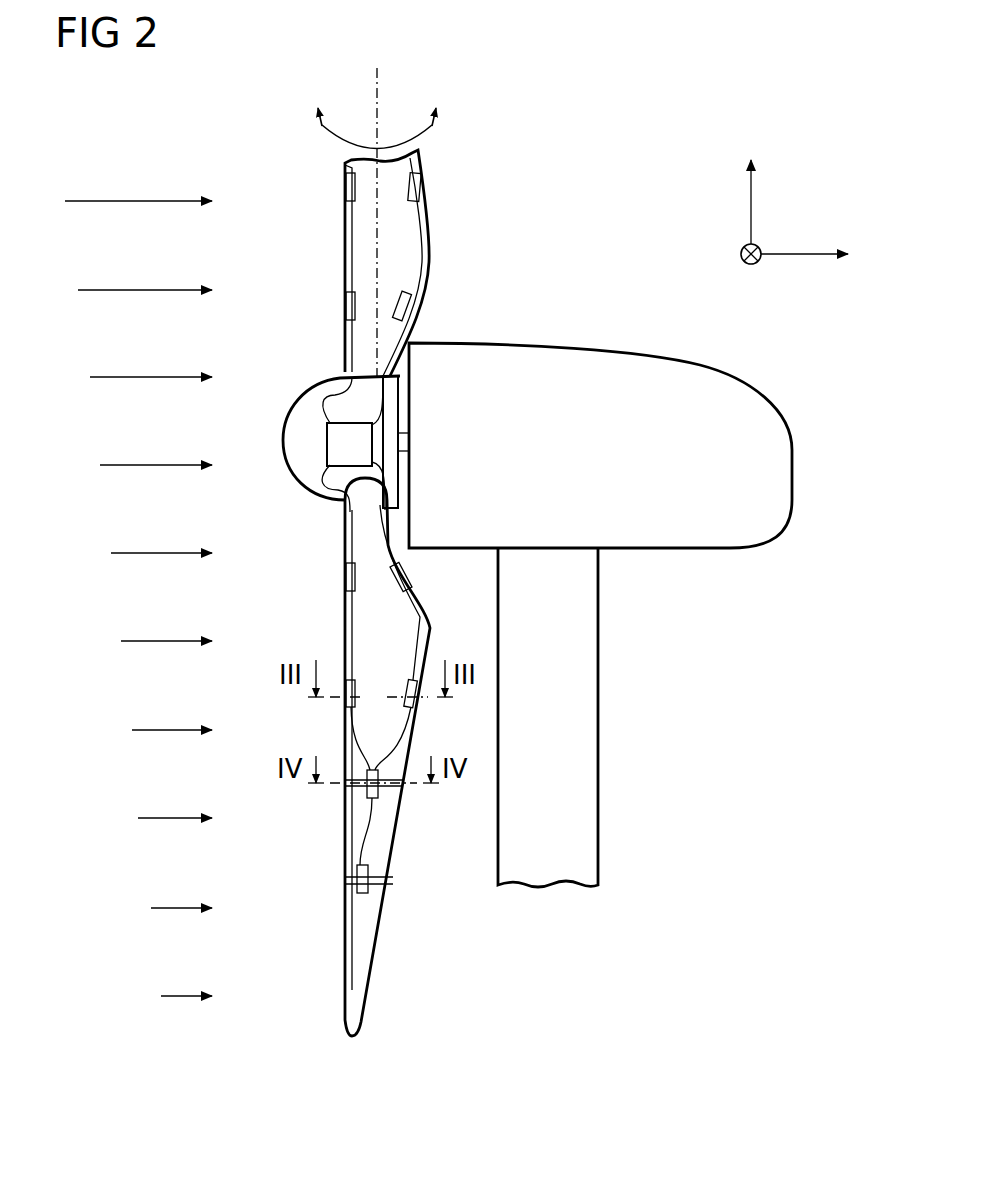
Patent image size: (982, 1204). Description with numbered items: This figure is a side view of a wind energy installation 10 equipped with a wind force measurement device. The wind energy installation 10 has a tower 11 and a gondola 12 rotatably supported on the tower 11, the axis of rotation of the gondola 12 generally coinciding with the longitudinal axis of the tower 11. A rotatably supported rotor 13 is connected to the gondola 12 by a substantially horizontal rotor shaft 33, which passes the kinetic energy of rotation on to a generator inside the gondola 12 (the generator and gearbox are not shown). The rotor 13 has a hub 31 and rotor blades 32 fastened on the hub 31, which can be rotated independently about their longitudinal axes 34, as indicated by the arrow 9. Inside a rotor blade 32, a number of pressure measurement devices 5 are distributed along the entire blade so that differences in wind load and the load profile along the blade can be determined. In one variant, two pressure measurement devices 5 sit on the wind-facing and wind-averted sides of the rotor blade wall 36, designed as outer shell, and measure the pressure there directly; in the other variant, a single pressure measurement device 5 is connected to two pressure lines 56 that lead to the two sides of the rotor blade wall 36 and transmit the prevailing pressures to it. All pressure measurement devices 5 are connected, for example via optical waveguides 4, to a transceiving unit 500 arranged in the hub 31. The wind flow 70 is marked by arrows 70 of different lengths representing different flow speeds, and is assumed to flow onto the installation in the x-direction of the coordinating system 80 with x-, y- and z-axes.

The optical waveguide 4 is at (326, 405).
The pressure measurement device 5 is at (346, 187).
The arrow 9 is at (320, 130).
The wind energy installation 10 is at (600, 598).
The tower 11 is at (590, 826).
The gondola 12 is at (684, 382).
The rotor 13 is at (244, 497).
The hub 31 is at (396, 392).
The rotor blade 32 is at (430, 266).
The rotor shaft 33 is at (409, 443).
The longitudinal axis 34 is at (377, 95).
The rotor blade wall 36 is at (336, 840).
The pressure line 56 is at (350, 789).
The wind flow arrow 70 is at (110, 200).
The coordinating system 80 is at (778, 218).
The transceiving unit 500 is at (337, 443).